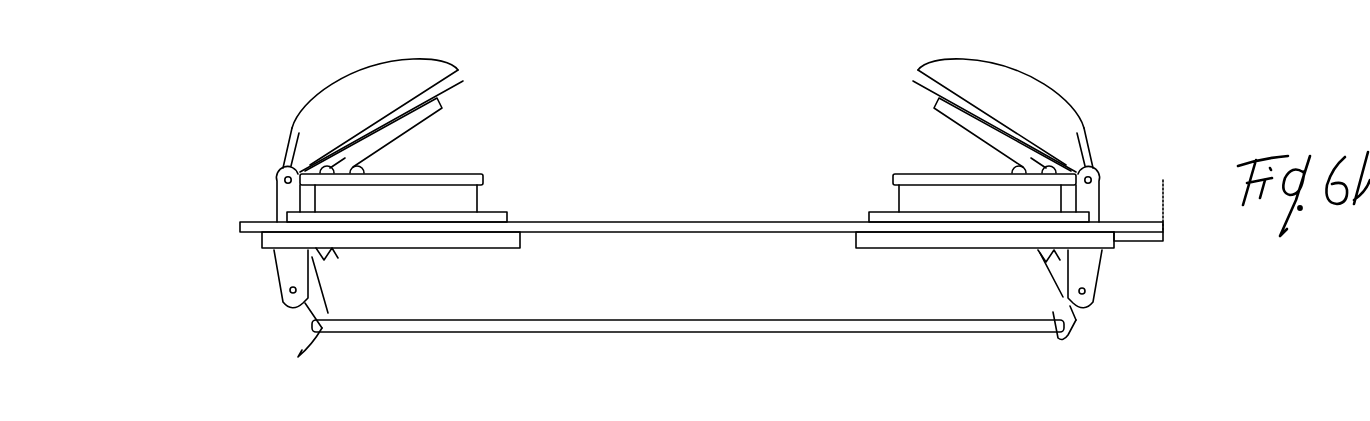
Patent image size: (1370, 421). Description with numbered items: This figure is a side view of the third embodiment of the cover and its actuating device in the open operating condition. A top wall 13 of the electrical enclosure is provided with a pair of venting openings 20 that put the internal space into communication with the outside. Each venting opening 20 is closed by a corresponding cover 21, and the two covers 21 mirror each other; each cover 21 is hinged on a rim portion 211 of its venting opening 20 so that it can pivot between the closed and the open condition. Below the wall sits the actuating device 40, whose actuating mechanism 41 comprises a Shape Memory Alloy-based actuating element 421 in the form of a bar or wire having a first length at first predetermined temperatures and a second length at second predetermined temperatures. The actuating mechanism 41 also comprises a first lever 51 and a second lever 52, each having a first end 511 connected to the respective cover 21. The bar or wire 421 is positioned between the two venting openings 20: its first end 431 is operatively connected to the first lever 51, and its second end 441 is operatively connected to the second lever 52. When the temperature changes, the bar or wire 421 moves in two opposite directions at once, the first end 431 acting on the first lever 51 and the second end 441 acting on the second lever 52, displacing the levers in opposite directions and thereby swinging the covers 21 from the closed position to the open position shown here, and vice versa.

The top wall 13 is at (657, 222).
The venting opening 20 is at (452, 168).
The cover 21 is at (333, 100).
The rim portion 211 is at (278, 172).
The first end 511 is at (340, 172).
The second lever 52 is at (280, 262).
The first lever 51 is at (1067, 265).
The actuating device 40 is at (724, 323).
The actuating mechanism 41 is at (280, 316).
The second end 441 is at (296, 363).
The first end 431 is at (1053, 331).
The SMA-based actuating element 421 is at (607, 332).